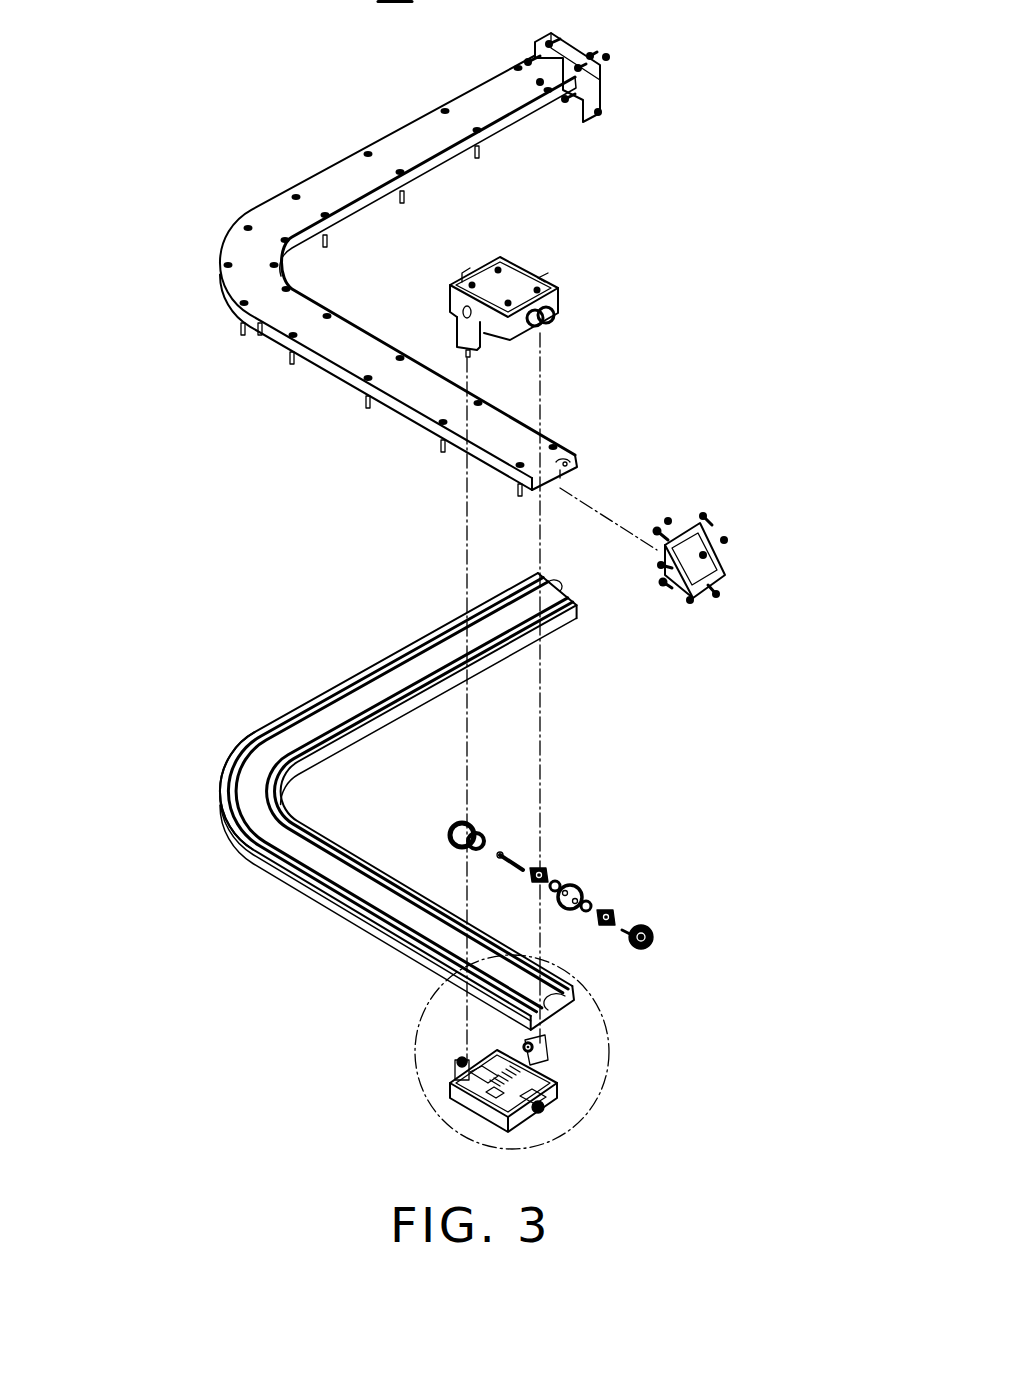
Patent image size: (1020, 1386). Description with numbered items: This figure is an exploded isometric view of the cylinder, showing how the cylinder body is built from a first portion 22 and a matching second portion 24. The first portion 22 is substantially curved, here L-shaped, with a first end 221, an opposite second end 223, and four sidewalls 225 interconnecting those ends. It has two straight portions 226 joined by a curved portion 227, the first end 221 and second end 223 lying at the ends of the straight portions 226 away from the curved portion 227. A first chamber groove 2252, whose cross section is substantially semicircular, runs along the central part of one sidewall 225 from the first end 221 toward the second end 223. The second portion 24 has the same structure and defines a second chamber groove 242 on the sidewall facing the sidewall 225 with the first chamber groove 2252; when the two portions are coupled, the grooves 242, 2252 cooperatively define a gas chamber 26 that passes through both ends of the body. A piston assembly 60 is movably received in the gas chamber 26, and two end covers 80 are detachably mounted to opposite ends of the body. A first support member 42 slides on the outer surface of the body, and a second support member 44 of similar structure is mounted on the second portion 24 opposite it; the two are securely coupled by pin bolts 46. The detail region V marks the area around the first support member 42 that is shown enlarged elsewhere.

The second portion 24 is at (328, 193).
The second chamber groove 242 is at (575, 485).
The second support member 44 is at (514, 273).
The pin bolts 46 is at (467, 355).
The end covers 80 is at (734, 552).
The first portion 22 is at (415, 795).
The straight portions 226 is at (445, 632).
The sidewalls 225 is at (303, 820).
The first chamber groove 2252 is at (333, 717).
The first end 221 is at (578, 606).
The second end 223 is at (575, 998).
The curved portion 227 is at (219, 815).
The gas chamber 26 is at (262, 780).
The piston assembly 60 is at (600, 886).
The detail view region V is at (413, 1030).
The first support member 42 is at (553, 1097).